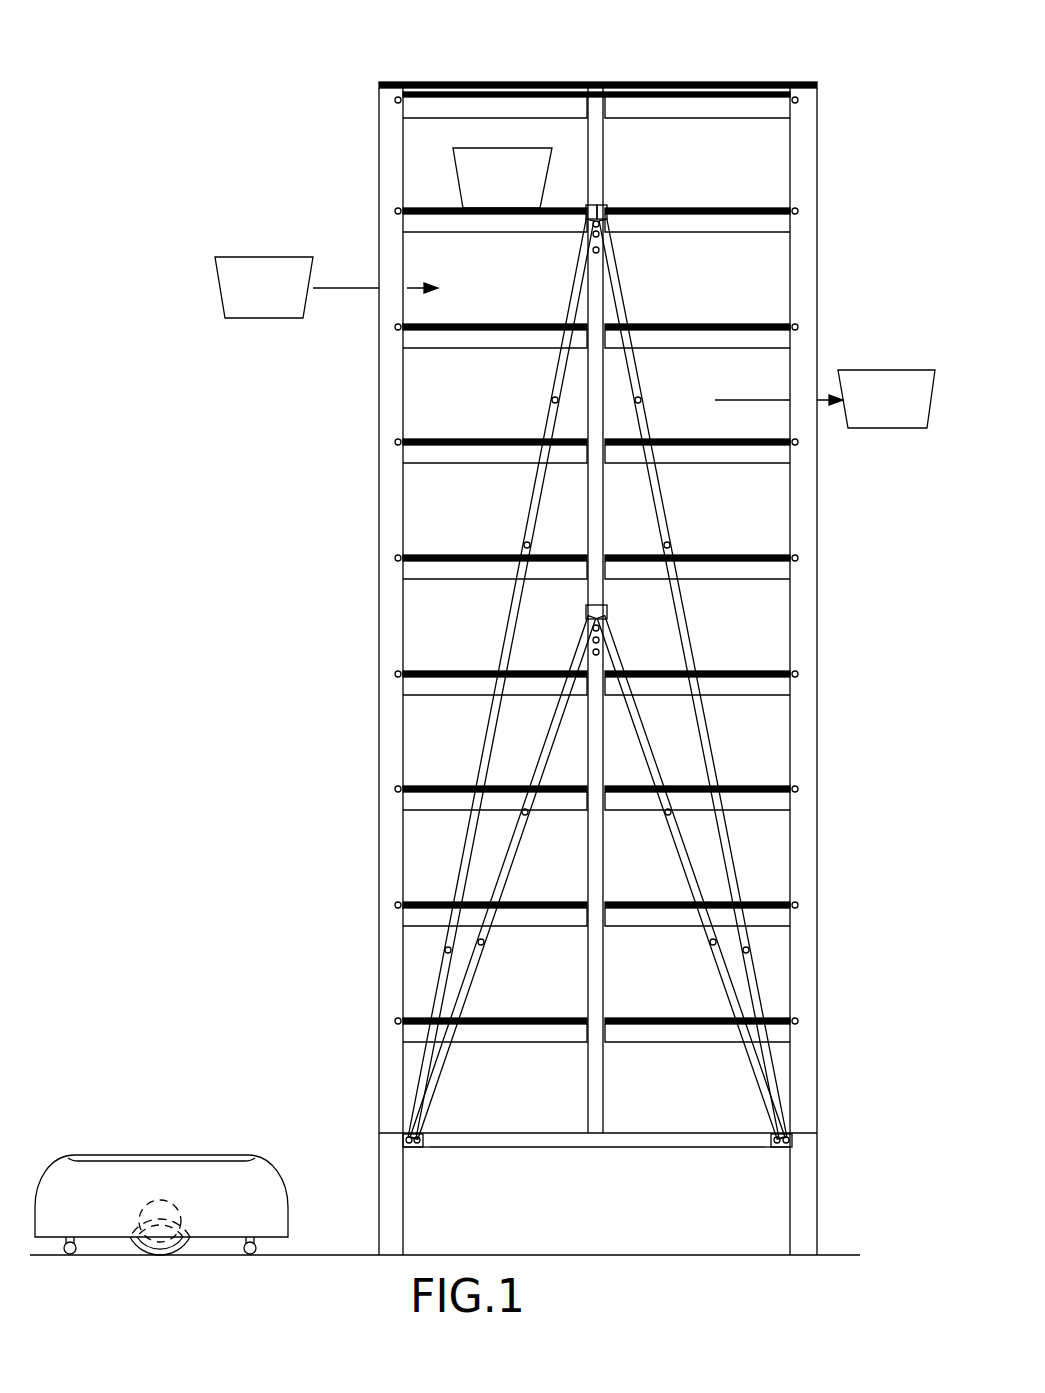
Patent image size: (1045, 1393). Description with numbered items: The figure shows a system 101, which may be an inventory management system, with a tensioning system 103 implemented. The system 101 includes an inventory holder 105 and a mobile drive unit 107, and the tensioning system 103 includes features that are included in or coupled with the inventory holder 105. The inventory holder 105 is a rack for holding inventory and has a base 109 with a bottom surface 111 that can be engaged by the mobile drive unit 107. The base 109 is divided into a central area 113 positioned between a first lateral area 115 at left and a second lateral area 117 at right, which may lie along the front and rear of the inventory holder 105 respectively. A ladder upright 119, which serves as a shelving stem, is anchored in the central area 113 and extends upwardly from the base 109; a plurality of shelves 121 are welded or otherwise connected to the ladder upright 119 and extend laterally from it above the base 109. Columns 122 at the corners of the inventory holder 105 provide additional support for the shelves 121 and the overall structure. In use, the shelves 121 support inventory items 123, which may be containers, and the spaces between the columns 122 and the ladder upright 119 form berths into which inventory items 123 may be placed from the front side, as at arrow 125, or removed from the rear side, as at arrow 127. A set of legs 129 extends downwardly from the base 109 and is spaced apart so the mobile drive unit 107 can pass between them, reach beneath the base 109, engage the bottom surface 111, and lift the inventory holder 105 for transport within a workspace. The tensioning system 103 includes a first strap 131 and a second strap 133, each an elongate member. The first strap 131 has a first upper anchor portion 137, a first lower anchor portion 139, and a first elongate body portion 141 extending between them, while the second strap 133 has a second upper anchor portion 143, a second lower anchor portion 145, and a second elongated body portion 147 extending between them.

The system 101 is at (208, 40).
The tensioning system 103 is at (292, 868).
The inventory holder 105 is at (242, 978).
The mobile drive unit 107 is at (52, 1176).
The base 109 is at (531, 1148).
The bottom surface 111 is at (689, 1148).
The central area 113 is at (604, 1182).
The first lateral area 115 is at (430, 1182).
The second lateral area 117 is at (768, 1176).
The ladder upright 119 is at (599, 1080).
The shelves 121 is at (531, 1043).
The columns 122 is at (391, 509).
The inventory items 123 is at (282, 301).
The arrow 125 is at (338, 289).
The arrow 127 is at (817, 403).
The legs 129 is at (380, 1197).
The first strap 131 is at (511, 628).
The second strap 133 is at (688, 624).
The first upper anchor portion 137 is at (586, 224).
The first lower anchor portion 139 is at (407, 1130).
The first elongate body portion 141 is at (528, 523).
The second upper anchor portion 143 is at (607, 224).
The second lower anchor portion 145 is at (794, 1127).
The second elongated body portion 147 is at (668, 510).